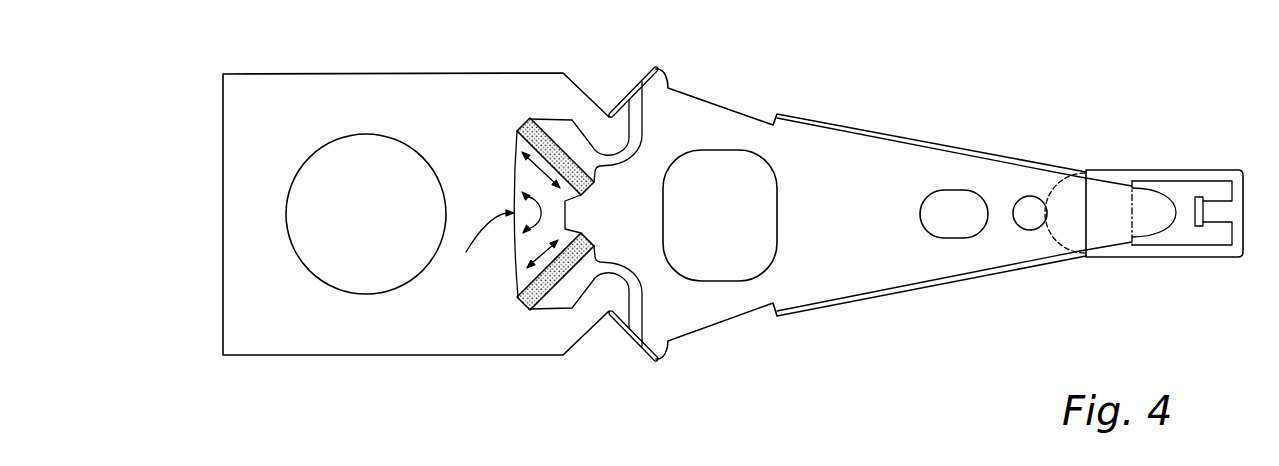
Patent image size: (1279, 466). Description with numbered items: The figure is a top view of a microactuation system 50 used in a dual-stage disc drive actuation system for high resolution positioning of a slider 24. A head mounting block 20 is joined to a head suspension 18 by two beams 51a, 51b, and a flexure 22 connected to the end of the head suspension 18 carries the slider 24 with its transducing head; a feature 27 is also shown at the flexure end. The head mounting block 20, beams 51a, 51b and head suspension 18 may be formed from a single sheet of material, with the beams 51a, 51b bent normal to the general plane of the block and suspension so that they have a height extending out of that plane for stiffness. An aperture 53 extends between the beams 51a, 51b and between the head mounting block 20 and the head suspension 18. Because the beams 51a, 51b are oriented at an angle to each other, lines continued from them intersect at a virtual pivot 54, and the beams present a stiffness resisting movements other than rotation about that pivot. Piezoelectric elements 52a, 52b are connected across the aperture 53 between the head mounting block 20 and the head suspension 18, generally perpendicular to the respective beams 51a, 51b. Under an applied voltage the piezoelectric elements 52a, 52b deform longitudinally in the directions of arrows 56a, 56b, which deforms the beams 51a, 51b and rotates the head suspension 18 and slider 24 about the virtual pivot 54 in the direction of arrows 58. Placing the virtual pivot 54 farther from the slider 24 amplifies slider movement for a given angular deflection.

The microactuation system 50 is at (203, 62).
The head mounting block 20 is at (438, 72).
The head suspension 18 is at (898, 135).
The flexure 22 is at (1130, 169).
The slider 24 is at (1183, 182).
The dimple 27 is at (1210, 226).
The beam 51a is at (641, 82).
The beam 51b is at (641, 350).
The piezoelectric element 52a is at (523, 124).
The piezoelectric element 52b is at (517, 305).
The aperture 53 is at (562, 297).
The virtual pivot 54 is at (473, 246).
The arrow 56a is at (538, 170).
The arrow 56b is at (540, 251).
The arrows 58 is at (517, 181).